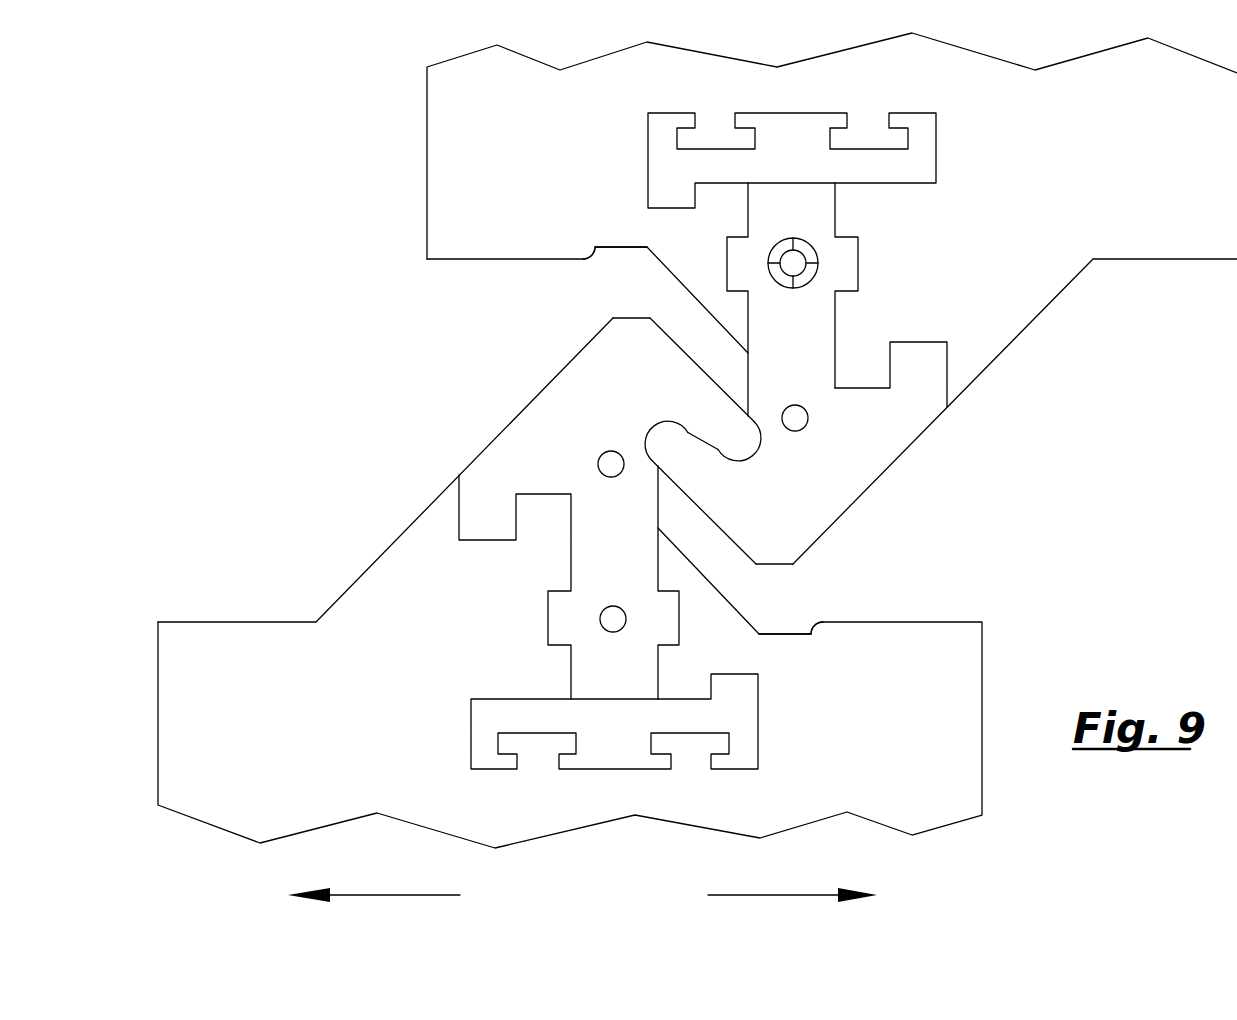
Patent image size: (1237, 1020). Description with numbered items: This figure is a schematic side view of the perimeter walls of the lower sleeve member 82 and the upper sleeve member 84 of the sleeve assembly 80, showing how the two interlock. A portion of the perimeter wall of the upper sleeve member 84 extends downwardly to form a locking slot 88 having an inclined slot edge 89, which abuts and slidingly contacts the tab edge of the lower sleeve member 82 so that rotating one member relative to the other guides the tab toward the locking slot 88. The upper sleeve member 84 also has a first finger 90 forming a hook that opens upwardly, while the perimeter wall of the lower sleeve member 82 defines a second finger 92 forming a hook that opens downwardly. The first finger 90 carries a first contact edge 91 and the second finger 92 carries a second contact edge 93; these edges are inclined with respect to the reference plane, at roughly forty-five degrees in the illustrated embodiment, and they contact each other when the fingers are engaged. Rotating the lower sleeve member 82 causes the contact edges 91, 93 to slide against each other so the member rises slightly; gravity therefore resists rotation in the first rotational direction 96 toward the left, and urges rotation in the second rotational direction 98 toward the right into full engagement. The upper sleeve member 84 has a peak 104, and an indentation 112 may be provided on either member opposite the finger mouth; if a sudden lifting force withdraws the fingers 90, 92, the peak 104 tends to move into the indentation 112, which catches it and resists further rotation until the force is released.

The sleeve assembly 80 is at (360, 337).
The lower sleeve member 82 is at (247, 620).
The upper sleeve member 84 is at (452, 187).
The locking slot 88 is at (790, 505).
The slot edge 89 is at (940, 423).
The first finger 90 is at (667, 447).
The first contact edge 91 is at (713, 447).
The second finger 92 is at (727, 430).
The second contact edge 93 is at (703, 441).
The first rotational direction 96 is at (378, 895).
The second rotational direction 98 is at (775, 895).
The peak 104 is at (776, 563).
The indentation 112 is at (614, 250).